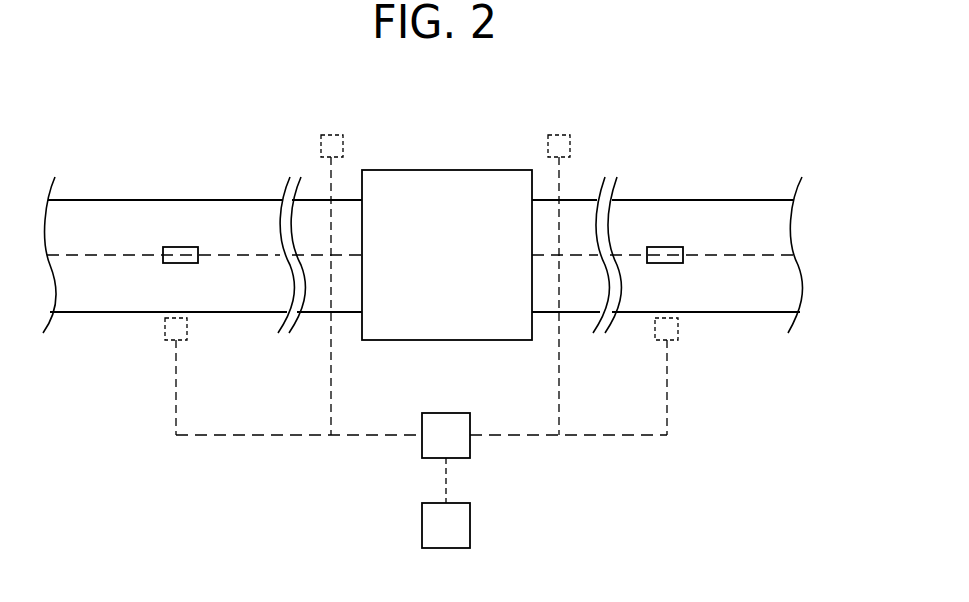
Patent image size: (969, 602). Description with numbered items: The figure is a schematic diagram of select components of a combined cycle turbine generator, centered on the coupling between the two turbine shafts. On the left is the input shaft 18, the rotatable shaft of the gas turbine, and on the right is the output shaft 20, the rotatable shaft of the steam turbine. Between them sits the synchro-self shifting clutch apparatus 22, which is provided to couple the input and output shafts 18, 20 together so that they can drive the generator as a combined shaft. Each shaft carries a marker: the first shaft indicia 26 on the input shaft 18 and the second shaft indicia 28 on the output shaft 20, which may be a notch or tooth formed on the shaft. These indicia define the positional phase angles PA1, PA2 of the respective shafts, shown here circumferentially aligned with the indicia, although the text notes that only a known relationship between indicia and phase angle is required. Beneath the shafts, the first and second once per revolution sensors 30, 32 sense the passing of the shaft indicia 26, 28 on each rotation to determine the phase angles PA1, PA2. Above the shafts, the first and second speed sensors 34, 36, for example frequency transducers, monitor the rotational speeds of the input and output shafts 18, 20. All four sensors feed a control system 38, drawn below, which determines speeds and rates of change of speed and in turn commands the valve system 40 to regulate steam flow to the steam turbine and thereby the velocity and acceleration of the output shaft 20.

The input shaft 18 is at (244, 317).
The output shaft 20 is at (756, 317).
The synchro-self shifting clutch apparatus 22 is at (462, 265).
The first shaft indicia 26 is at (181, 247).
The second shaft indicia 28 is at (664, 247).
The first once per revolution sensor 30 is at (165, 330).
The second once per revolution sensor 32 is at (678, 330).
The first speed sensor 34 is at (559, 135).
The second speed sensor 36 is at (331, 135).
The control system 38 is at (460, 447).
The valve system 40 is at (460, 537).
The positional phase angle of the input shaft PA1 is at (108, 255).
The positional phase angle of the output shaft PA2 is at (738, 250).